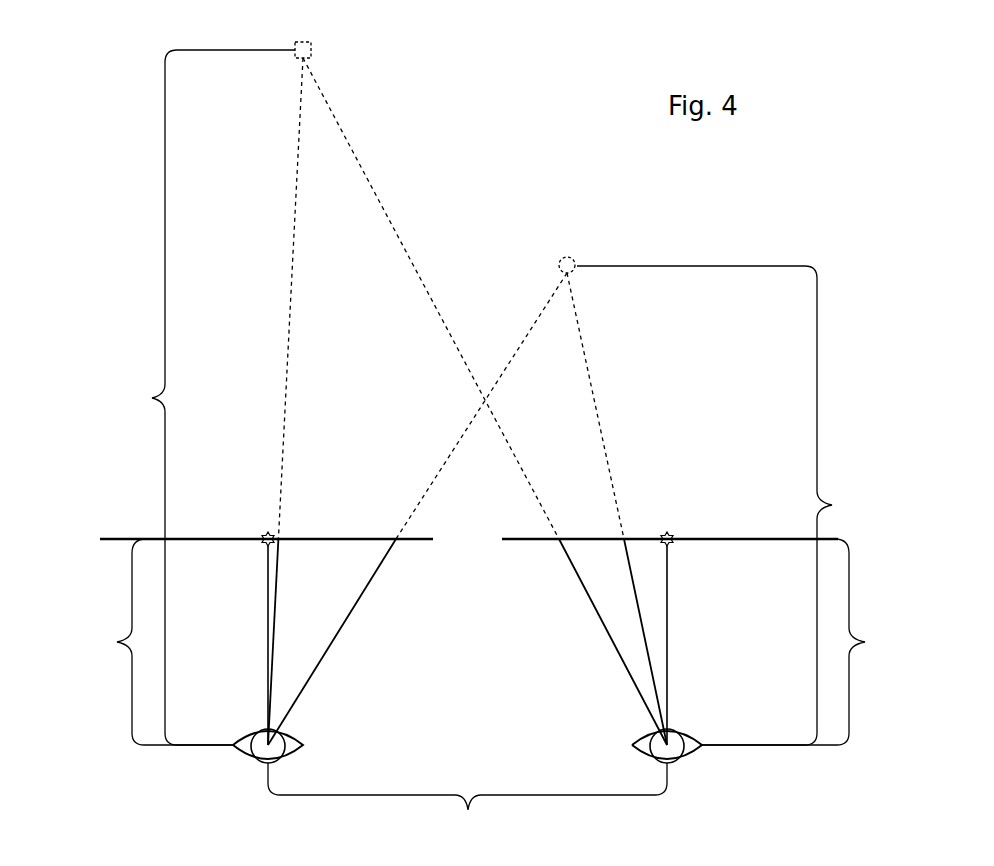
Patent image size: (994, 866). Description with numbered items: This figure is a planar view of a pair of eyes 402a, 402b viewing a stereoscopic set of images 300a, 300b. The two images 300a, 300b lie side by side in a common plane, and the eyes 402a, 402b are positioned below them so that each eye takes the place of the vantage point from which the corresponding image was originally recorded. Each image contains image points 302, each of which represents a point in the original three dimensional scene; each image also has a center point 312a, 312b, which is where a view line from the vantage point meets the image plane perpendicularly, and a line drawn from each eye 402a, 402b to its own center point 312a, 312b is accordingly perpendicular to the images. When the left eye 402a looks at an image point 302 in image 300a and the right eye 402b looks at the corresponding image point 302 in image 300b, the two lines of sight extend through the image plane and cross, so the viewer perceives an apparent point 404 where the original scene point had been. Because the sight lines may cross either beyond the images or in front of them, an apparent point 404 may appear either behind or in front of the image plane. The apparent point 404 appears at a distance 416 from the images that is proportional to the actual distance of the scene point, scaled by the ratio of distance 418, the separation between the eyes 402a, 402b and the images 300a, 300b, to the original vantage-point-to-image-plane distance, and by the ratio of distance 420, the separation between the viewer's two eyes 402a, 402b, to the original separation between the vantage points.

The image 300a is at (422, 541).
The image 300b is at (508, 541).
The image point 302 is at (280, 538).
The center point 312a is at (262, 538).
The center point 312b is at (676, 538).
The eye 402a is at (320, 740).
The eye 402b is at (632, 746).
The apparent point 404 is at (295, 50).
The distance 416 is at (493, 397).
The distance 418 is at (493, 642).
The distance 420 is at (467, 803).